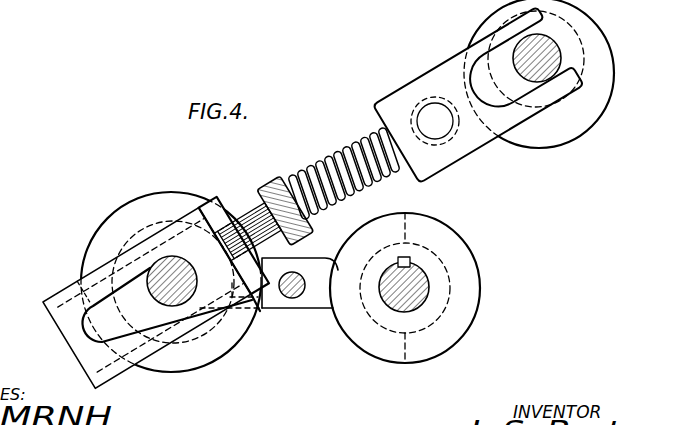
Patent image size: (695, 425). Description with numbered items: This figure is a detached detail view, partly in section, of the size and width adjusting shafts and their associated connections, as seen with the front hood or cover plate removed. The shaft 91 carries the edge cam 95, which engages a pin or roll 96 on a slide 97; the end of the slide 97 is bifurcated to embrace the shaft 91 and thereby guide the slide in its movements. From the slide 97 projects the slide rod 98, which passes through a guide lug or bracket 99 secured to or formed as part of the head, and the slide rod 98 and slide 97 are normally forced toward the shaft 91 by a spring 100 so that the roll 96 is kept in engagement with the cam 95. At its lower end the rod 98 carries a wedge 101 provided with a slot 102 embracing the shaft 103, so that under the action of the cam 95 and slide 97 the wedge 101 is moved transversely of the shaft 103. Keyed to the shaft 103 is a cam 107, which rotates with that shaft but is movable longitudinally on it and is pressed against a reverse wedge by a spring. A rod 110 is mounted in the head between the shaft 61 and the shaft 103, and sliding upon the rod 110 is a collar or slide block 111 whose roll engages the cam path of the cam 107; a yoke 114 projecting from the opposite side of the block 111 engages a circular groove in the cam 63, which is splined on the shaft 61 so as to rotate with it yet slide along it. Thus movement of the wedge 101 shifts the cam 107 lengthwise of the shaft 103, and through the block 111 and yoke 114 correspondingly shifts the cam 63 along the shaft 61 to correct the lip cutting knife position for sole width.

The shaft 61 is at (410, 285).
The cam 63 is at (451, 250).
The shaft 91 is at (556, 37).
The edge cam 95 is at (605, 78).
The pin or roll 96 is at (433, 108).
The slide 97 is at (437, 171).
The slide rod 98 is at (247, 208).
The guide lug or bracket 99 is at (283, 180).
The spring 100 is at (348, 147).
The wedge 101 is at (65, 301).
The slot 102 is at (128, 298).
The shaft 103 is at (150, 266).
The cam 107 is at (183, 364).
The rod 110 is at (292, 299).
The collar or slide block 111 is at (303, 311).
The yoke 114 is at (328, 313).